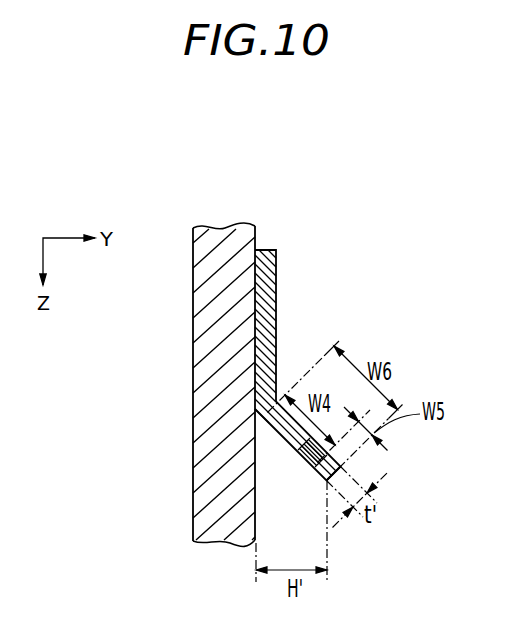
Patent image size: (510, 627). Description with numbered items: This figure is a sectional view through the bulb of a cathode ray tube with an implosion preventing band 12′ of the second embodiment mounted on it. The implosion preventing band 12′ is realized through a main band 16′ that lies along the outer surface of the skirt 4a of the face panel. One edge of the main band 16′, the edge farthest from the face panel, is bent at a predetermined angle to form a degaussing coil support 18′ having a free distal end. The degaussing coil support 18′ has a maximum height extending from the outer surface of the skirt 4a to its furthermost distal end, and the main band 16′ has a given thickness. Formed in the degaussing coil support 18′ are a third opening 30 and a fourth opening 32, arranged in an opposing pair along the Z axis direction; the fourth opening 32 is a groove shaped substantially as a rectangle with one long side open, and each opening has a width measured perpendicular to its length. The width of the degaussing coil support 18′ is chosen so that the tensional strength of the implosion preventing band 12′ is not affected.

The skirt 4a is at (208, 293).
The implosion preventing band 12′ is at (279, 261).
The main band 16′ is at (276, 305).
The degaussing coil support 18′ is at (305, 458).
The third opening 30 is at (284, 431).
The fourth opening 32 is at (337, 467).